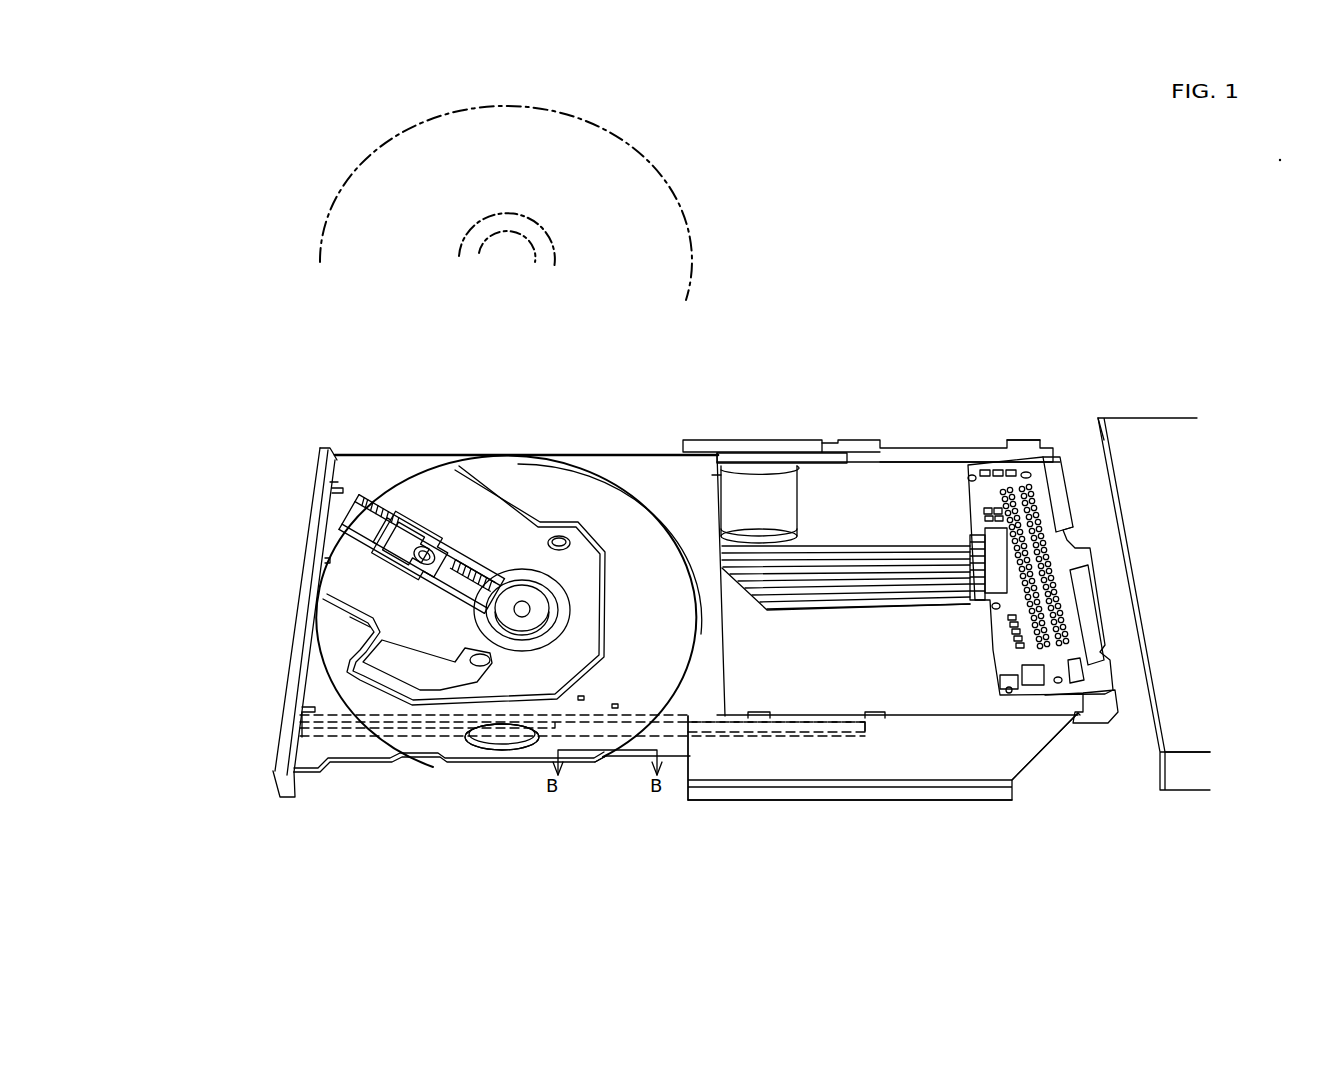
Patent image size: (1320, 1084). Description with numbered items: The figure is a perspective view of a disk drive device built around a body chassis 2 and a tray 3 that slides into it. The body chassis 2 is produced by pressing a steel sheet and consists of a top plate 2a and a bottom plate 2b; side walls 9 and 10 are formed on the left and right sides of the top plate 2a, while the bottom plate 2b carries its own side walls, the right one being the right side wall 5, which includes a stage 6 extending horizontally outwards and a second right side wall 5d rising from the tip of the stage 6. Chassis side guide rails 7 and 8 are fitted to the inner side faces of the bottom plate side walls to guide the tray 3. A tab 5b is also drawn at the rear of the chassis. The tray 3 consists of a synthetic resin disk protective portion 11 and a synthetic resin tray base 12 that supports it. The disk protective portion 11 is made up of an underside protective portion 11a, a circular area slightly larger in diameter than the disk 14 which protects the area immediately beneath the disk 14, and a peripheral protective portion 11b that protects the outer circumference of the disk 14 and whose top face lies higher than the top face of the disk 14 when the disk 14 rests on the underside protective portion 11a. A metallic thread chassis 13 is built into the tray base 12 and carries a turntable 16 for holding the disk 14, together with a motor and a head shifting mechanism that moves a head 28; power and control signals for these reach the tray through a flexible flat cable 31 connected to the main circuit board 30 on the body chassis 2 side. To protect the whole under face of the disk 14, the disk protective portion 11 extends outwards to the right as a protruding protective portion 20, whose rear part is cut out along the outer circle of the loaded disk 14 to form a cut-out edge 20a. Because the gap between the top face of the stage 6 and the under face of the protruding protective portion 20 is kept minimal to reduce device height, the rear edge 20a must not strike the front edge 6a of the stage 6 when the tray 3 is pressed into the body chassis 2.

The body chassis 2 is at (881, 440).
The top plate 2a is at (1126, 432).
The bottom plate 2b is at (928, 473).
The tray 3 is at (416, 445).
The right side wall 5 is at (957, 712).
The housing tab 5b is at (1012, 440).
The second right side wall 5d is at (875, 790).
The stage 6 is at (1012, 748).
The front edge of the stage 6a is at (688, 763).
The chassis side guide rail 7 is at (826, 457).
The chassis side guide rail 8 is at (745, 722).
The side wall 9 is at (1100, 462).
The side wall 10 is at (1180, 777).
The disk protective portion 11 is at (362, 468).
The underside protective portion 11a is at (590, 467).
The peripheral protective portion 11b is at (389, 480).
The tray base 12 is at (510, 457).
The thread chassis 13 is at (325, 622).
The disk 14 is at (657, 170).
The turntable 16 is at (545, 597).
The protruding protective portion 20 is at (450, 750).
The cut-out edge 20a is at (602, 757).
The head 28 is at (426, 551).
The main circuit board 30 is at (1073, 601).
The flexible flat cable 31 is at (897, 577).